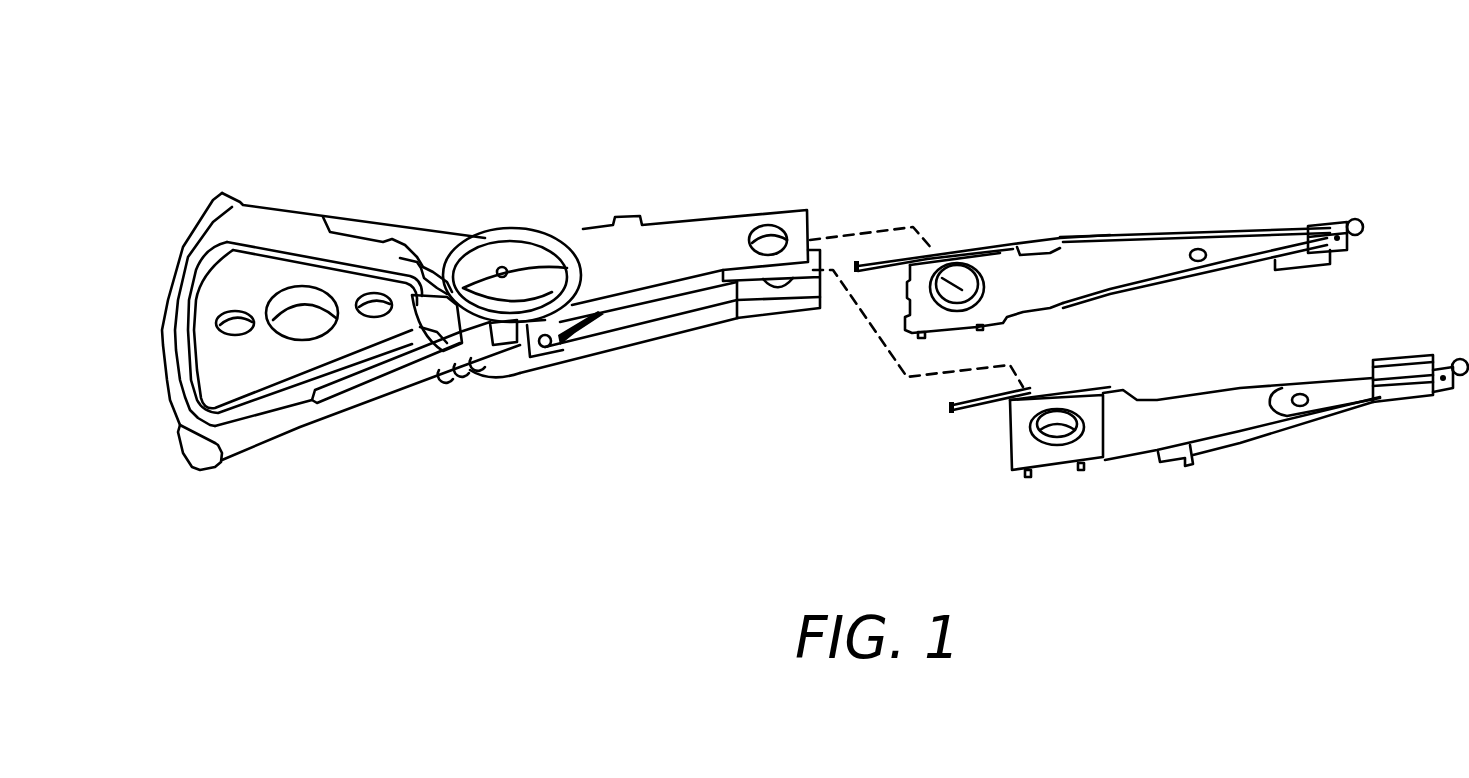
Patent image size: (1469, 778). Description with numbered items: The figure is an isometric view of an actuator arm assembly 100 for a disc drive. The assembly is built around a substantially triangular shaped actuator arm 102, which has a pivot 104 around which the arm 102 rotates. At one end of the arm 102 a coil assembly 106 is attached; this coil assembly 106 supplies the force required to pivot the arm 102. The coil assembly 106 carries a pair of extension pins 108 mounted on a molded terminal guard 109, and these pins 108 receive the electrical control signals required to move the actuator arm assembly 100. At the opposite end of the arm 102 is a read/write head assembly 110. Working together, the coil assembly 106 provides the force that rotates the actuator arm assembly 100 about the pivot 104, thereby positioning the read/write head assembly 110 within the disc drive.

The actuator arm assembly 100 is at (730, 117).
The actuator arm 102 is at (631, 217).
The pivot 104 is at (484, 235).
The coil assembly 106 is at (277, 232).
The extension pins 108 is at (476, 403).
The molded terminal guard 109 is at (513, 380).
The read/write head assembly 110 is at (1284, 368).